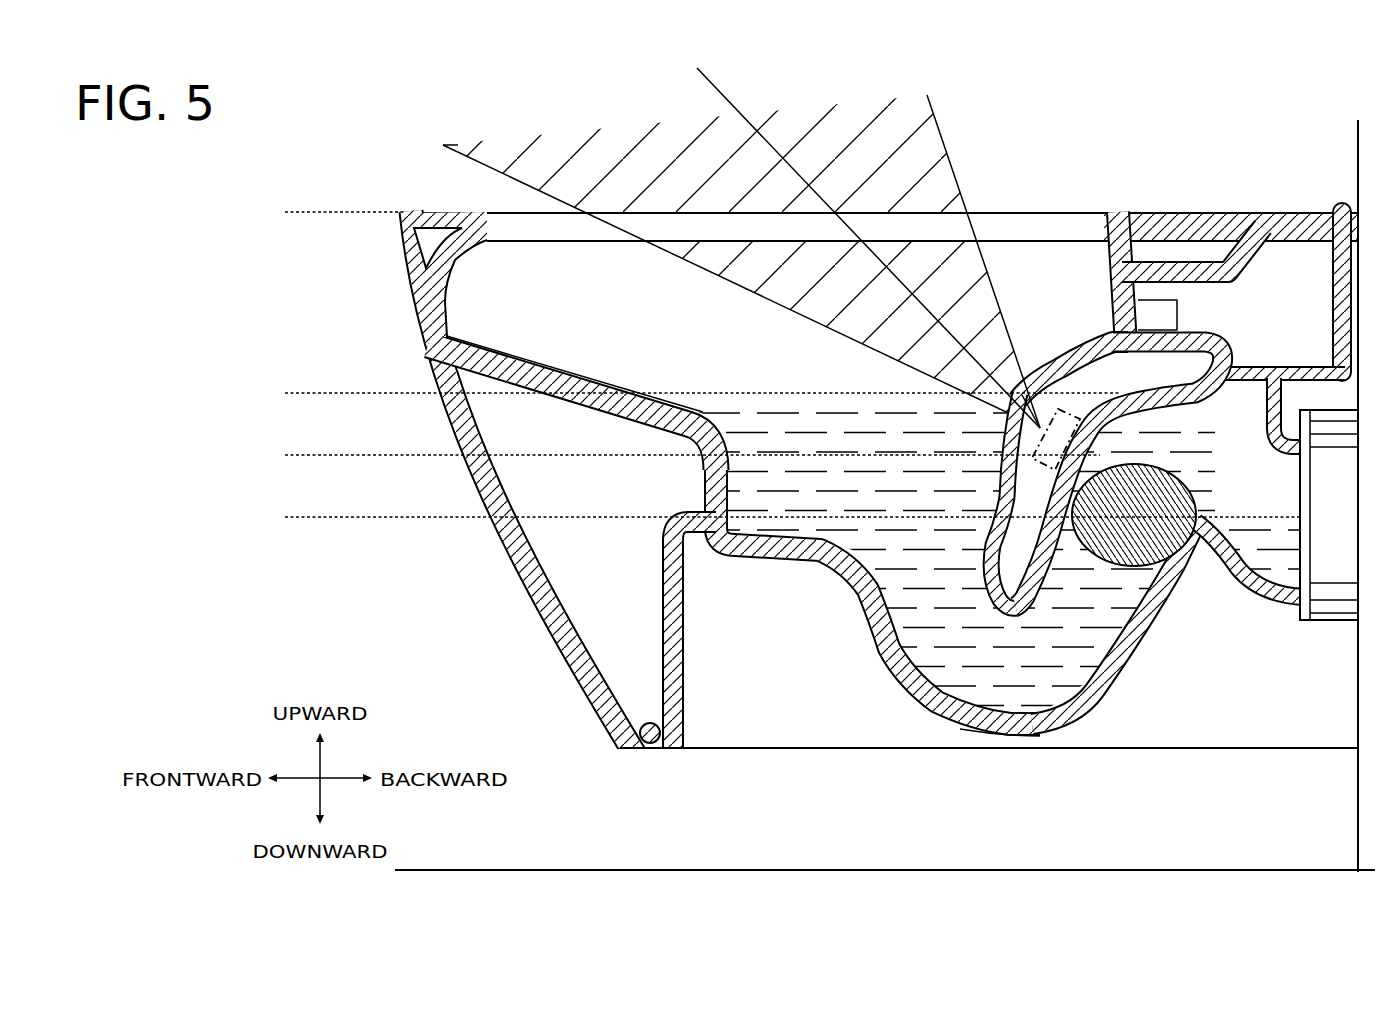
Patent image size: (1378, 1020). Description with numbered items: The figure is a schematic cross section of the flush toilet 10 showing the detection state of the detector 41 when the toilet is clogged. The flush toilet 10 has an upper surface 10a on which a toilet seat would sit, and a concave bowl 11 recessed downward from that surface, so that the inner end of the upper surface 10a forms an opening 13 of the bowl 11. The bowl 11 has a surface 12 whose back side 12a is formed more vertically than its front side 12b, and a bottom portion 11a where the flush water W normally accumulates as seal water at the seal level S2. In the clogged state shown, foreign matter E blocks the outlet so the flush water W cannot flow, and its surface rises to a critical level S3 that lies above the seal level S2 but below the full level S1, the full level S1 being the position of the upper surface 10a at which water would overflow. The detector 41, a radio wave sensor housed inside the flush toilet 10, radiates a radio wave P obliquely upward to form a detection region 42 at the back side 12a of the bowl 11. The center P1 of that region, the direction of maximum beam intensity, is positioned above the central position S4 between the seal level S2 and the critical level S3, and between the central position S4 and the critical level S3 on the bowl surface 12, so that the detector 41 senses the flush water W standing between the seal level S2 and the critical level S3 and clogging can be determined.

The flush toilet 10 is at (1207, 198).
The upper surface 10a is at (450, 213).
The bowl 11 is at (580, 383).
The bottom portion 11a is at (964, 717).
The surface 12 is at (620, 387).
The back side 12a is at (1080, 343).
The front side 12b is at (552, 366).
The opening 13 is at (1100, 212).
The detector 41 is at (1085, 425).
The detection region 42 is at (1030, 395).
The foreign matter E is at (1133, 530).
The flush water W is at (1107, 647).
The radio wave P is at (916, 110).
The center P1 is at (722, 90).
The full level S1 is at (320, 213).
The seal level S2 is at (767, 519).
The critical level S3 is at (677, 396).
The central position S4 is at (667, 457).